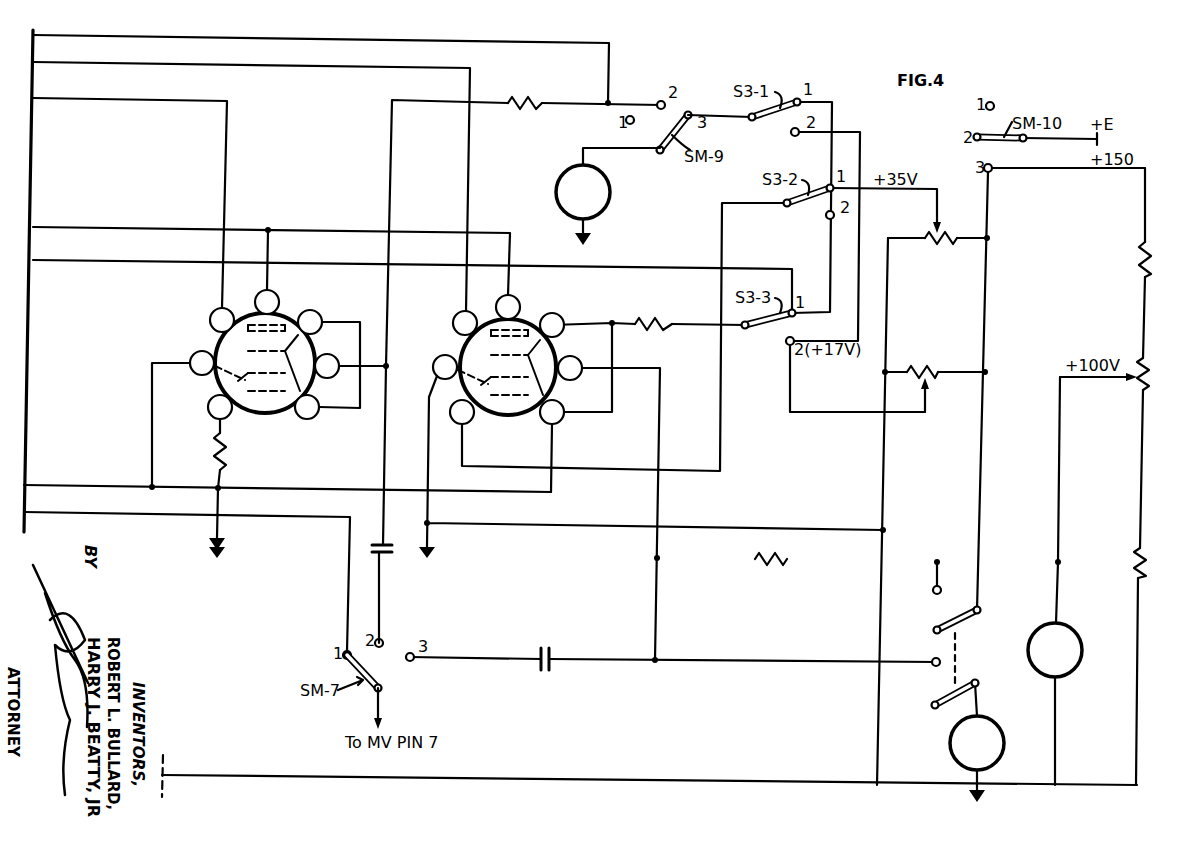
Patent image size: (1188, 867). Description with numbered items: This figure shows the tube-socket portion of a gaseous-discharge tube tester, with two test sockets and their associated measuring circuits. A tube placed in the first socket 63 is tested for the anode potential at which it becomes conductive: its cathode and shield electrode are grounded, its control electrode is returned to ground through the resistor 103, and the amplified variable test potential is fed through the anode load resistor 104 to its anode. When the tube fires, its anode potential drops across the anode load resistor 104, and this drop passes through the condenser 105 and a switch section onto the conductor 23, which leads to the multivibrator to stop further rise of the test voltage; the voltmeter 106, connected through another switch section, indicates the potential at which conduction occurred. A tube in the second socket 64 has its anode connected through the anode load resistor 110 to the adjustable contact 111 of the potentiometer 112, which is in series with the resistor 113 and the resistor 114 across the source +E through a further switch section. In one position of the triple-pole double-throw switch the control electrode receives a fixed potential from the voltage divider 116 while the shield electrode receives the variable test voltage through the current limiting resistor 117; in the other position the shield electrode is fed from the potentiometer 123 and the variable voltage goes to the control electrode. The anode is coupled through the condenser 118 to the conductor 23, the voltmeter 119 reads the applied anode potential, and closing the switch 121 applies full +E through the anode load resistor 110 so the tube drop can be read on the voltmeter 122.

The conductor 23 is at (382, 713).
The socket 63 is at (282, 316).
The socket 64 is at (532, 318).
The resistor 103 is at (217, 452).
The anode load resistor 104 is at (517, 107).
The condenser 105 is at (387, 555).
The voltmeter 106 is at (603, 195).
The anode load resistor 110 is at (785, 565).
The adjustable contact 111 is at (1125, 380).
The potentiometer 112 is at (1159, 377).
The resistor 113 is at (1132, 563).
The resistor 114 is at (1138, 262).
The voltage divider 116 is at (934, 226).
The current limiting resistor 117 is at (653, 323).
The condenser 118 is at (548, 650).
The voltmeter 119 is at (1082, 650).
The switch 121 is at (965, 662).
The voltmeter 122 is at (1003, 752).
The potentiometer 123 is at (929, 380).